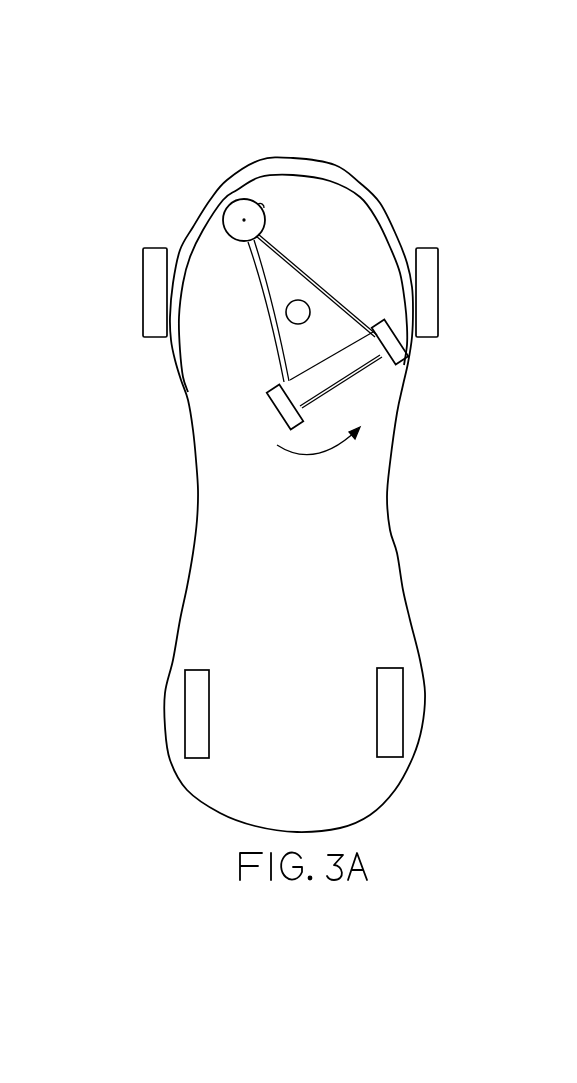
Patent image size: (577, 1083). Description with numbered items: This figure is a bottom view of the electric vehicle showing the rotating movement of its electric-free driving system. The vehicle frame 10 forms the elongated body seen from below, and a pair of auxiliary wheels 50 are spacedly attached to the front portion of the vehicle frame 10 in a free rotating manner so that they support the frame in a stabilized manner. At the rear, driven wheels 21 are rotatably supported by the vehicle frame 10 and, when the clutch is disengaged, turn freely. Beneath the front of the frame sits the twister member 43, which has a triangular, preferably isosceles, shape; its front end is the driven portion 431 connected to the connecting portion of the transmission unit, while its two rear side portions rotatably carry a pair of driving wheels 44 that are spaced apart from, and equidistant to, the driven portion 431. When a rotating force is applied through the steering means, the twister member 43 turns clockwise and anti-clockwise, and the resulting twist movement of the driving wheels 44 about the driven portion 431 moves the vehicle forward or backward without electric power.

The vehicle frame 10 is at (187, 587).
The driven wheel 21 is at (197, 705).
The twister member 43 is at (325, 330).
The driven portion 431 is at (298, 312).
The driving wheels 44 is at (293, 411).
The auxiliary wheels 50 is at (150, 285).